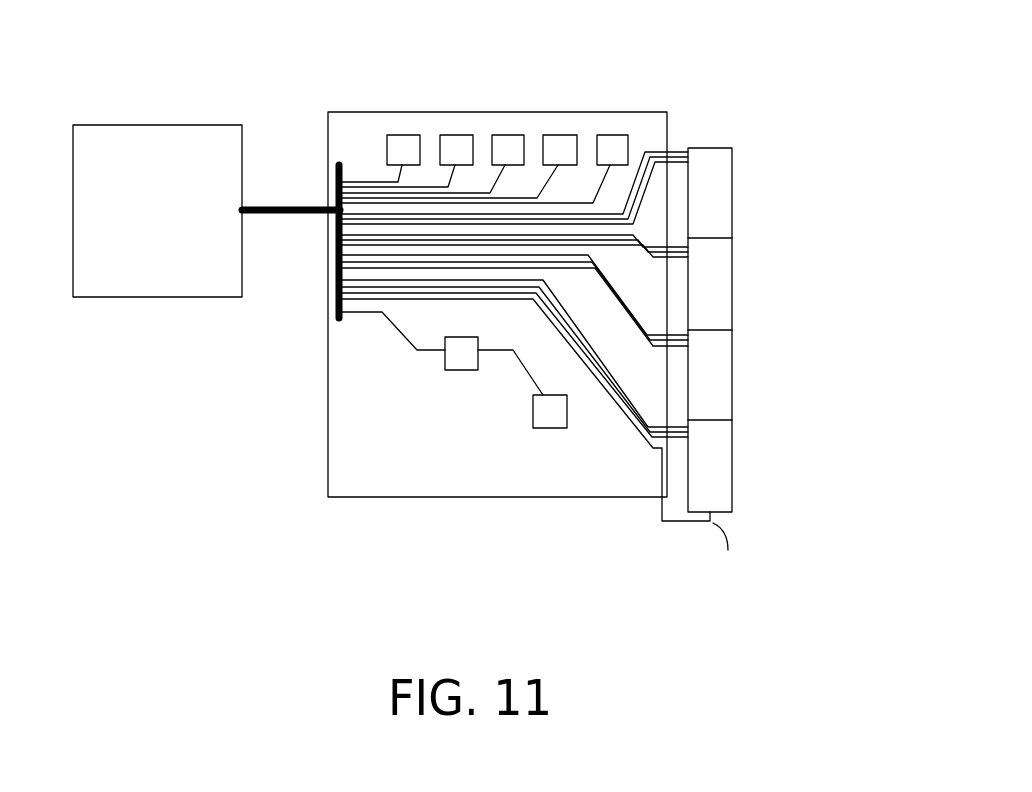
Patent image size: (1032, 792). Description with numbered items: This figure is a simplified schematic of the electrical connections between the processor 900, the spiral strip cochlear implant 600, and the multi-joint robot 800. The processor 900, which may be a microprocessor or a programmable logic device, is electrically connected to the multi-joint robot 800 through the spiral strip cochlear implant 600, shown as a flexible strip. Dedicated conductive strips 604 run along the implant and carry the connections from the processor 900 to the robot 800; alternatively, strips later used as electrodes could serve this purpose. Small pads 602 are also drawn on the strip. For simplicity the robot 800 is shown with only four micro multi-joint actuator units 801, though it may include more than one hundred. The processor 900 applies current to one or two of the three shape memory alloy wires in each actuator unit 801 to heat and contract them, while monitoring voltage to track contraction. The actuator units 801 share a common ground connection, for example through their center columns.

The processor 900 is at (90, 140).
The spiral strip cochlear implant 600 is at (343, 458).
The dedicated conductive strips 604 is at (370, 180).
The sensor pads 602 is at (608, 135).
The multi-joint robot 800 is at (761, 292).
The micro multi-joint actuator units 801 is at (710, 173).